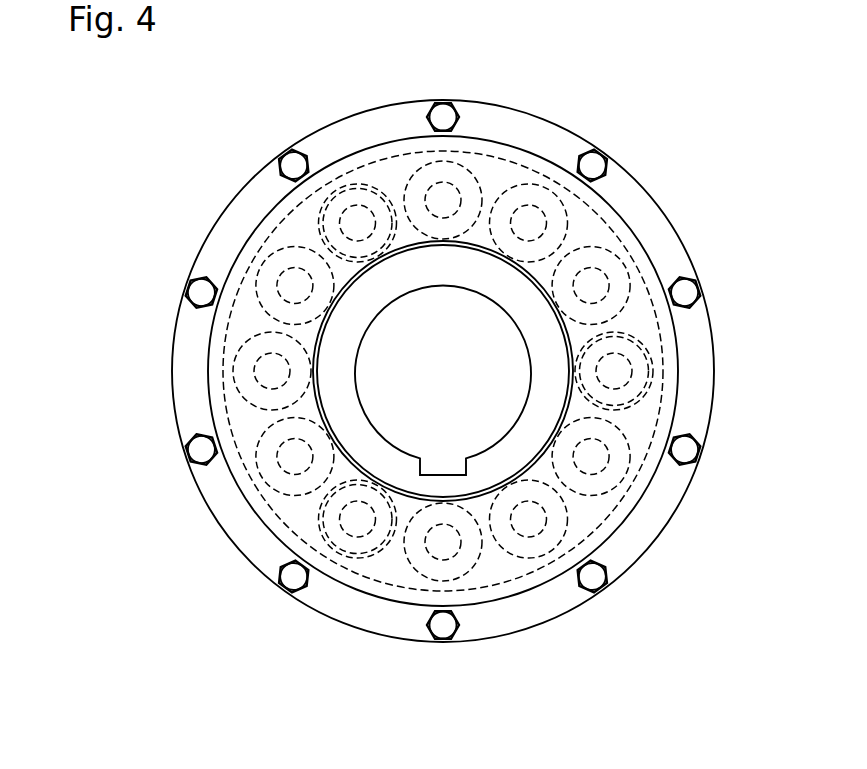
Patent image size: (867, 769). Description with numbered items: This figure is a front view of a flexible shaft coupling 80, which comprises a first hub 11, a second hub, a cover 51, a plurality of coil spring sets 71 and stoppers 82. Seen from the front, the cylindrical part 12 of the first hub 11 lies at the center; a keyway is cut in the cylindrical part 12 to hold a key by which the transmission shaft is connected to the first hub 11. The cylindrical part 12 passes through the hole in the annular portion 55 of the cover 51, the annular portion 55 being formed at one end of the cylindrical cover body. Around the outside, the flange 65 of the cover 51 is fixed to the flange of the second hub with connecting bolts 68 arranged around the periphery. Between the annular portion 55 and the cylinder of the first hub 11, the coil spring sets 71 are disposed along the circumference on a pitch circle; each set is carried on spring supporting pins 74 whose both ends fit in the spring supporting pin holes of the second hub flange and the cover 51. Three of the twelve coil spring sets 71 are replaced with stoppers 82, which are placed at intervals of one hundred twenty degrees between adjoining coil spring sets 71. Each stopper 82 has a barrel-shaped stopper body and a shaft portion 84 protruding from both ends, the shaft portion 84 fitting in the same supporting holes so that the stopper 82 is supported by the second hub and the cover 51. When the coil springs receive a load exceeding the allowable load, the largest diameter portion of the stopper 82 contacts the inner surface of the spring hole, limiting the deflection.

The flexible shaft coupling 80 is at (186, 98).
The cover 51 is at (541, 104).
The annular portion 55 is at (548, 167).
The flange 65 is at (653, 220).
The connecting bolts 68 is at (592, 166).
The stopper 82 is at (361, 200).
The shaft portion 84 is at (347, 214).
The coil spring set 71 is at (283, 263).
The spring supporting pins 74 is at (285, 288).
The first hub 11 is at (544, 359).
The cylindrical part 12 is at (544, 409).